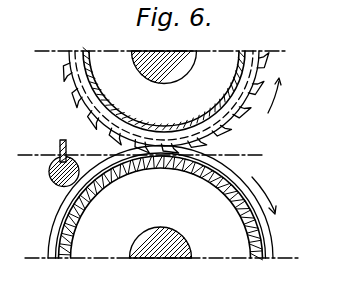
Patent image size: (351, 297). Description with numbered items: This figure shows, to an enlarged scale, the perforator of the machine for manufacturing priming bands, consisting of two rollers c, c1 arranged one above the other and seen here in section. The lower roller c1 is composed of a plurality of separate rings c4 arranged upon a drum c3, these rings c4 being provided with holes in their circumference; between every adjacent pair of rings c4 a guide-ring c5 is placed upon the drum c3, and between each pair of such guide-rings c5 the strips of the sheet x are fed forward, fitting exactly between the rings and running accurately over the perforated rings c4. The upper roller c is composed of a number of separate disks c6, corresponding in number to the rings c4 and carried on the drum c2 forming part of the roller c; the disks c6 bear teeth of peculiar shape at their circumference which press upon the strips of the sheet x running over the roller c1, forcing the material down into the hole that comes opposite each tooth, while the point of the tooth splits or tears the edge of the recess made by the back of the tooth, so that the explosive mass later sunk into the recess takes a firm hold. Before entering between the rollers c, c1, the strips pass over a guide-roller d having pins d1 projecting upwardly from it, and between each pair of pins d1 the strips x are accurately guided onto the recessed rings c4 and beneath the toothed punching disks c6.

The upper roller c is at (160, 95).
The lower roller c1 is at (162, 217).
The drum c2 is at (234, 91).
The drum c3 is at (238, 207).
The ring c4 is at (262, 237).
The guide-ring c5 is at (56, 228).
The disk c6 is at (77, 76).
The guide-roller d is at (48, 175).
The pin d1 is at (43, 149).
The sheet x is at (256, 156).